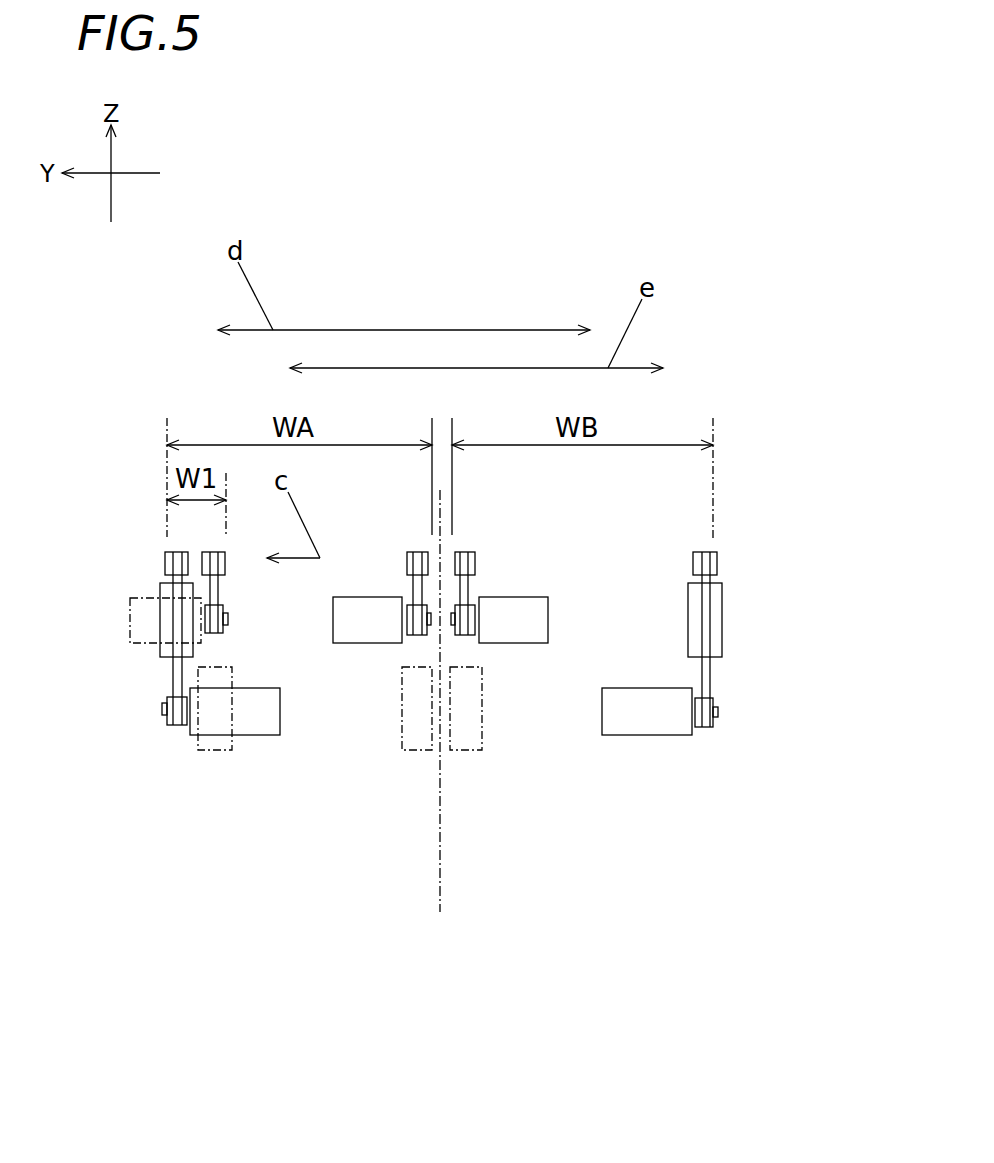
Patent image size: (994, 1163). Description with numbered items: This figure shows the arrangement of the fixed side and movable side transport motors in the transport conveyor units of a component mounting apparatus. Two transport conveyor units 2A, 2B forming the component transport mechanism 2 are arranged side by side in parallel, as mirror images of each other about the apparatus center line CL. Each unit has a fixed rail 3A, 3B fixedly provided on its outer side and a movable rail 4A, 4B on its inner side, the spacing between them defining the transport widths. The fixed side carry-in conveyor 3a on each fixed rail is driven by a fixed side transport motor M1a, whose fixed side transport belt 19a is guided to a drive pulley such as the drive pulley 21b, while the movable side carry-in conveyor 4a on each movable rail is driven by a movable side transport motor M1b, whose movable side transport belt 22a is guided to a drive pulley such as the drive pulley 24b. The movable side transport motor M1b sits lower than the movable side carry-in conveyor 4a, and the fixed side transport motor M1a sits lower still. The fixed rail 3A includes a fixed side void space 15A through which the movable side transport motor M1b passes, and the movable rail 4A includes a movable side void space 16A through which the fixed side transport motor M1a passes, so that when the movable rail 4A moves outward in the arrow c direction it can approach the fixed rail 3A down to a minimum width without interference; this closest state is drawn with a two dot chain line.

The component transport mechanism 2 is at (445, 213).
The transport conveyor unit 2A is at (309, 1005).
The transport conveyor unit 2B is at (574, 1005).
The fixed rail 3A is at (188, 937).
The fixed rail 3B is at (693, 937).
The fixed side carry-in conveyor 3a is at (170, 552).
The movable rail 4A is at (401, 937).
The movable rail 4B is at (482, 937).
The movable side carry-in conveyor 4a is at (408, 552).
The fixed side void space 15A is at (162, 652).
The movable side void space 16A is at (212, 750).
The fixed side transport belt 19a is at (172, 677).
The drive pulley 21b is at (168, 726).
The movable side transport belt 22a is at (415, 597).
The drive pulley 24b is at (480, 603).
The fixed side transport motor M1a is at (264, 736).
The movable side transport motor M1b is at (132, 615).
The apparatus center line CL is at (437, 879).